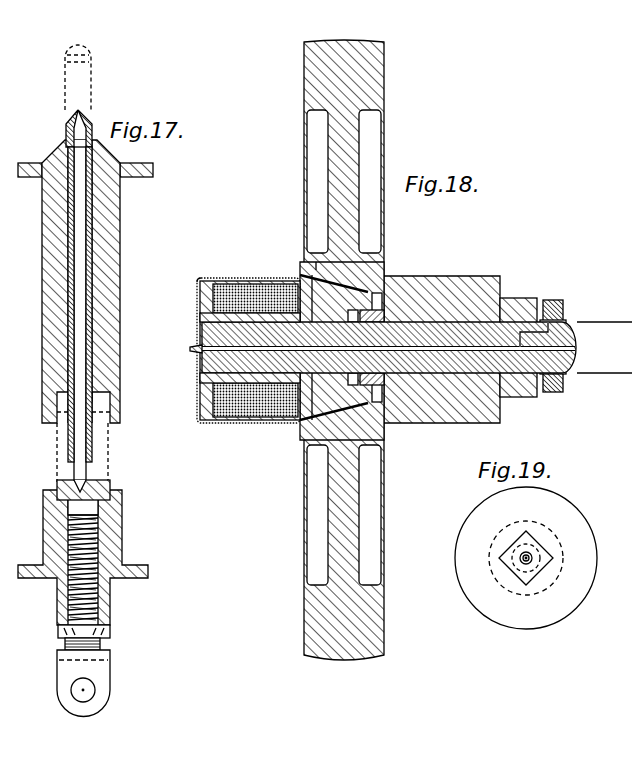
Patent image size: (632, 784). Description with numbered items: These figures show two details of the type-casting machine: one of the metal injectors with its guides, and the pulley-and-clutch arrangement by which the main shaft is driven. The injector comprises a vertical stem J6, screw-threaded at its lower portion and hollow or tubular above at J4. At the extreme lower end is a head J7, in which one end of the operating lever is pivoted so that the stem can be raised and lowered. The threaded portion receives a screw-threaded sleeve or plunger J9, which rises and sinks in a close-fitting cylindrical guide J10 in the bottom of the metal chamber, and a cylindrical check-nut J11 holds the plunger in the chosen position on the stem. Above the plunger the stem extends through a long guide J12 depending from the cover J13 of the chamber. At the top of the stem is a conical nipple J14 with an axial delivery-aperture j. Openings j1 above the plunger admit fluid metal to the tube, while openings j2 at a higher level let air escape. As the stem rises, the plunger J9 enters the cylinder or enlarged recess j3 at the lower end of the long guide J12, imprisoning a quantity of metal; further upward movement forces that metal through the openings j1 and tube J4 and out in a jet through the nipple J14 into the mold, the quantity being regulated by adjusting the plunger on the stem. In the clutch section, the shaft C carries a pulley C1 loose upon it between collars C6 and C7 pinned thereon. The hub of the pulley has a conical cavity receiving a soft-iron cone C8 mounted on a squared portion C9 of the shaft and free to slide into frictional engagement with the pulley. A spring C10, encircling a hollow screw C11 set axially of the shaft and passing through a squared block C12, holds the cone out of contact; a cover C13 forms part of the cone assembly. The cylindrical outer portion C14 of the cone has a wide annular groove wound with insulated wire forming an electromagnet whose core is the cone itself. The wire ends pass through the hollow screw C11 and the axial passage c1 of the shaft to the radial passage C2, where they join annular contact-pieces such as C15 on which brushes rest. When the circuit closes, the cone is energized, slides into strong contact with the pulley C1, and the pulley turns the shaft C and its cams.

In FIG. 17, the axial delivery-aperture j is at (78, 110).
In FIG. 17, the conical nipple J14 is at (89, 120).
In FIG. 17, the cover J13 is at (153, 170).
In FIG. 17, the tube J4 is at (80, 268).
In FIG. 17, the long guide J12 is at (115, 318).
In FIG. 17, the openings j2 is at (92, 396).
In FIG. 17, the cylinder or enlarged recess j3 is at (97, 417).
In FIG. 17, the openings j1 is at (92, 468).
In FIG. 17, the screw-threaded sleeve or plunger J9 is at (110, 490).
In FIG. 17, the vertical stem J6 is at (86, 504).
In FIG. 17, the cylindrical guide J10 is at (122, 535).
In FIG. 17, the check-nut J11 is at (110, 632).
In FIG. 17, the head J7 is at (57, 662).
In FIG. 18, the pulley C1 is at (328, 350).
In FIG. 18, the axial passage c1 is at (316, 262).
In FIG. 18, the cone C8 is at (380, 263).
In FIG. 18, the collar C6 is at (388, 292).
In FIG. 18, the collar C7 is at (518, 298).
In FIG. 18, the housing C13 is at (226, 284).
In FIG. 18, the squared portion C9 is at (268, 407).
In FIG. 18, the cylindrical outer portion C14 is at (200, 278).
In FIG. 18, the annular contact-piece C15 is at (552, 300).
In FIG. 18, the radial passage C2 is at (568, 322).
In FIG. 18, the shaft C is at (604, 347).
In FIG. 18, the hollow screw C11 is at (195, 350).
In FIG. 18, the squared block C12 is at (203, 326).
In FIG. 18, the spring C10 is at (232, 360).